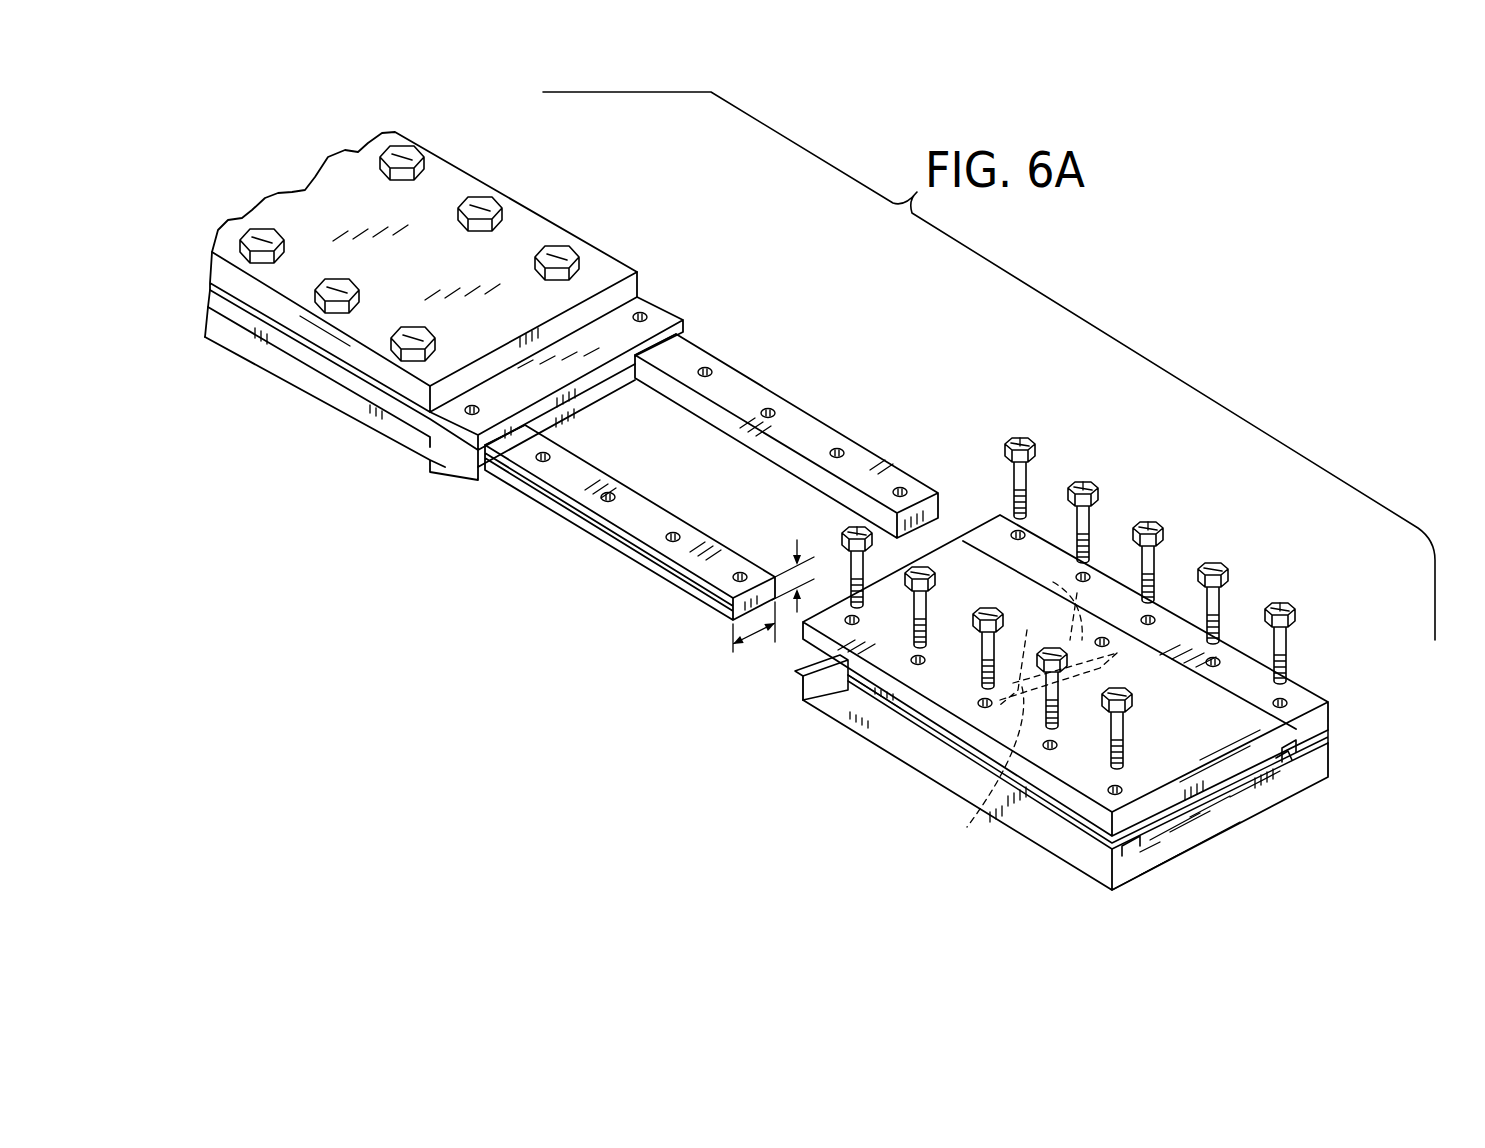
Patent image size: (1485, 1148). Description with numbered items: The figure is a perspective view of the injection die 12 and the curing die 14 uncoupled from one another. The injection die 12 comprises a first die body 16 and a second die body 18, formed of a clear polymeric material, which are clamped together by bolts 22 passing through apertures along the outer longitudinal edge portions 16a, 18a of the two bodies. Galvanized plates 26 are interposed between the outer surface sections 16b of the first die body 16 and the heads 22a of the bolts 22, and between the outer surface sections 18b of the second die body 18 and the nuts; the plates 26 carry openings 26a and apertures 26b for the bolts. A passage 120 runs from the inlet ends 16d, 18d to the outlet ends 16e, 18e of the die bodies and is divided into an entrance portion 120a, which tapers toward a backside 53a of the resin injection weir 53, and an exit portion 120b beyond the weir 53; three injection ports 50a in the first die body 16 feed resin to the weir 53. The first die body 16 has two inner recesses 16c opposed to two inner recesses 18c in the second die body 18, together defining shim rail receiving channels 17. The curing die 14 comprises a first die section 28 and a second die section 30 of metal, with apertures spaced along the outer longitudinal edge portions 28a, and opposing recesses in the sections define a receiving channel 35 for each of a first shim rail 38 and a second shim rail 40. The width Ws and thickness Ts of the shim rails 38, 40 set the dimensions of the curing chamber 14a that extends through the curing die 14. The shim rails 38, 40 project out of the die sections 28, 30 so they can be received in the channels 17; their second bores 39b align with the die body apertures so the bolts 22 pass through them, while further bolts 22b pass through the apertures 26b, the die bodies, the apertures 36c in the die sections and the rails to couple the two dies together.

The injection die 12 is at (1337, 631).
The curing die 14 is at (617, 218).
The curing chamber 14a is at (587, 393).
The first die body 16 is at (953, 735).
The outer longitudinal edge portions 16a is at (1318, 720).
The outer surface sections 16b is at (1303, 707).
The inner recesses 16c is at (1286, 752).
The inlet end 16d is at (1197, 823).
The outlet end 16e is at (810, 662).
The shim rail receiving channels 17 is at (1126, 829).
The second die body 18 is at (967, 783).
The outer longitudinal edge portions 18a is at (1320, 773).
The outer surface sections 18b is at (1313, 787).
The inner recesses 18c is at (1300, 760).
The inlet end 18d is at (1197, 810).
The outlet end 18e is at (830, 703).
The bolts 22 is at (1083, 482).
The heads 22a is at (1085, 482).
The bolts 22b is at (857, 527).
The galvanized plates 26 is at (870, 757).
The openings 26a is at (1086, 573).
The apertures 26b is at (1016, 531).
The first die section 28 is at (528, 222).
The outer longitudinal edge portions 28a is at (528, 228).
The second die section 30 is at (345, 395).
The receiving channel 35 is at (660, 345).
The apertures 36c is at (641, 313).
The first shim rail 38 is at (633, 530).
The second bores 39b is at (772, 411).
The second shim rail 40 is at (812, 428).
The injection ports 50a is at (1064, 645).
The resin injection weir 53 is at (988, 775).
The backside 53a is at (1053, 599).
The passage 120 is at (1184, 830).
The entrance portion 120a is at (1240, 787).
The exit portion 120b is at (867, 735).
The thickness Ts is at (788, 572).
The width Ws is at (745, 650).